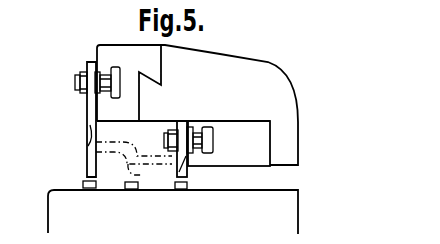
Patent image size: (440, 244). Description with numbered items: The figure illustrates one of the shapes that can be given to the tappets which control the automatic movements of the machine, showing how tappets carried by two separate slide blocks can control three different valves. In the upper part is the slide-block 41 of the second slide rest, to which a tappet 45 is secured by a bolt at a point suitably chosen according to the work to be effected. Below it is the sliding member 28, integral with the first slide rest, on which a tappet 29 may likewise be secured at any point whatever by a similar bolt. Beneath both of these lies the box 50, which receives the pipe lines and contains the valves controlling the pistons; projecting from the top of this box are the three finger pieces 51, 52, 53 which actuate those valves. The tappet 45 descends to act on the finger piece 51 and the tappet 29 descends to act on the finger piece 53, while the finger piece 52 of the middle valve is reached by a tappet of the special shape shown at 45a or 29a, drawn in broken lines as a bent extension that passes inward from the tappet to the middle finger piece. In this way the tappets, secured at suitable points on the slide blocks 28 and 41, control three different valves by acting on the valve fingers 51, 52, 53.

The slide-block 41 is at (186, 105).
The sliding member 28 is at (217, 143).
The tappet 29 is at (188, 175).
The tappet shape 29a is at (150, 157).
The tappet 45 is at (90, 164).
The tappet shape 45a is at (118, 150).
The box 50 is at (173, 212).
The finger piece 51 is at (91, 188).
The finger piece 52 is at (133, 189).
The finger piece 53 is at (182, 189).